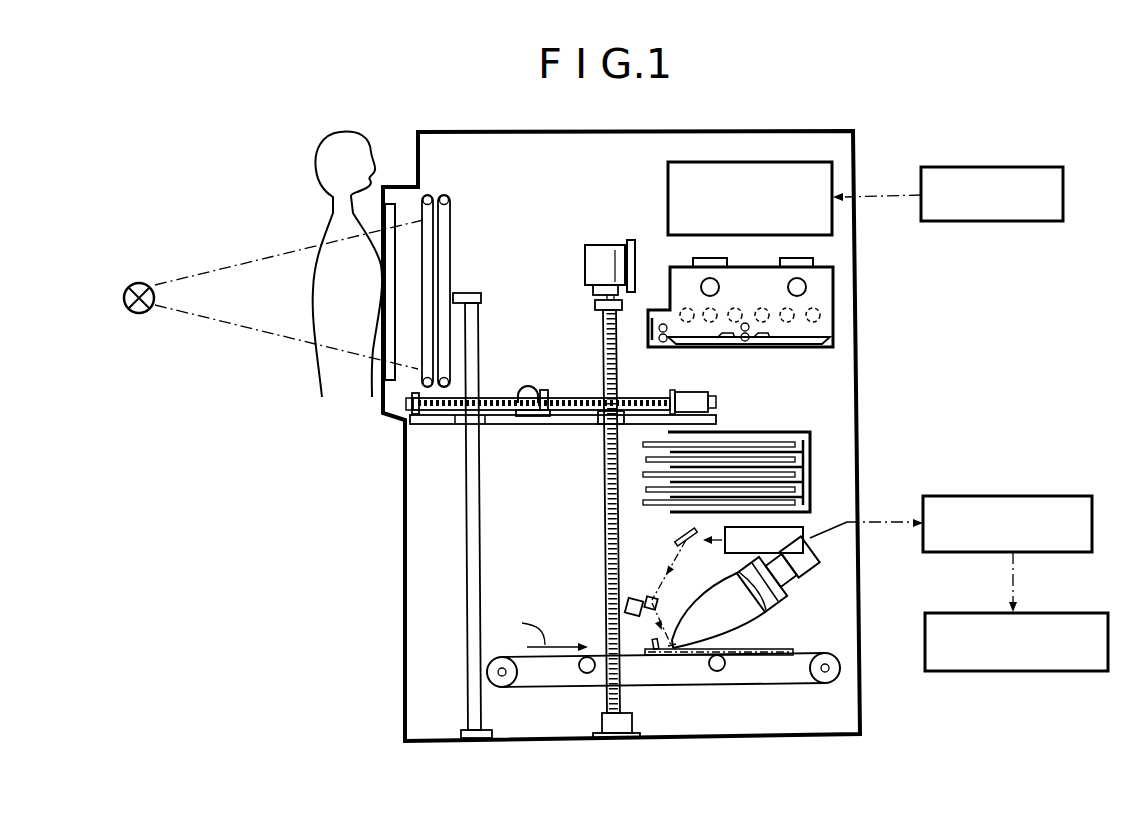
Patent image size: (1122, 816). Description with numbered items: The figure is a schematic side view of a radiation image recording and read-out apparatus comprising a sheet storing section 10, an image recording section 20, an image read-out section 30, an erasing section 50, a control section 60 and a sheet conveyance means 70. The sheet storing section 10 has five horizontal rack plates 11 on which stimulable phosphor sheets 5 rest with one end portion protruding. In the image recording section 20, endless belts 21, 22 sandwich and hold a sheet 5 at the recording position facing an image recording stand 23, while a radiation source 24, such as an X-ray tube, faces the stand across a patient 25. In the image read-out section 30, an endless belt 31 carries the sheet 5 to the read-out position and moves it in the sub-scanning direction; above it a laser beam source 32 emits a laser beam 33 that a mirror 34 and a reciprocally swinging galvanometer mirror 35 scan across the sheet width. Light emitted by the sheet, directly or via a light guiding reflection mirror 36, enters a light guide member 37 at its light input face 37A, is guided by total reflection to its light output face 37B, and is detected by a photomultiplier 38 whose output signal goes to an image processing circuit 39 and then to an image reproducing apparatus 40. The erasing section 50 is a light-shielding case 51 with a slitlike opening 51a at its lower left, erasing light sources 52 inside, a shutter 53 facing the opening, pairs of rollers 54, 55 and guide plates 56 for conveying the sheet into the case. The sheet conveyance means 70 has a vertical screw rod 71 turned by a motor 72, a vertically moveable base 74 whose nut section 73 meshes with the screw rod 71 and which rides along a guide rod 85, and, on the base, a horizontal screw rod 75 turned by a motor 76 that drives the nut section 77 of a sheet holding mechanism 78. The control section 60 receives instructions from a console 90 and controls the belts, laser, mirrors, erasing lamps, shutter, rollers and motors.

The stimulable phosphor sheet 5 is at (443, 260).
The sheet storing section 10 is at (832, 432).
The rack plate 11 is at (810, 515).
The image recording section 20 is at (292, 208).
The endless belt 21 is at (418, 198).
The endless belt 22 is at (448, 227).
The image recording stand 23 is at (372, 368).
The radiation source 24 is at (123, 296).
The patient body 25 is at (320, 366).
The image read-out section 30 is at (822, 582).
The endless belt 31 is at (785, 684).
The laser beam source 32 is at (738, 553).
The laser beam 33 is at (676, 560).
The mirror 34 is at (683, 531).
The galvanometer mirror 35 is at (647, 594).
The light guiding reflection mirror 36 is at (653, 645).
The light guide member 37 is at (740, 631).
The light input face 37A is at (672, 655).
The light output face 37B is at (753, 589).
The photomultiplier 38 is at (786, 580).
The image processing circuit 39 is at (1011, 496).
The image reproducing apparatus 40 is at (1033, 672).
The erasing section 50 is at (845, 297).
The case 51 is at (838, 320).
The slitlike opening 51a is at (646, 323).
The erasing light source 52 is at (748, 312).
The shutter 53 is at (653, 327).
The pair of rollers 54 is at (665, 333).
The pair of rollers 55 is at (748, 334).
The guide plate 56 is at (716, 343).
The control section 60 is at (668, 192).
The sheet conveyance means 70 is at (540, 468).
The screw rod 71 is at (607, 456).
The motor 72 is at (600, 246).
The nut section 73 is at (597, 428).
The vertically moveable base 74 is at (716, 416).
The screw rod 75 is at (581, 397).
The motor 76 is at (709, 396).
The nut section 77 is at (531, 431).
The sheet holding mechanism 78 is at (528, 376).
The guide rod 85 is at (479, 468).
The console 90 is at (973, 221).